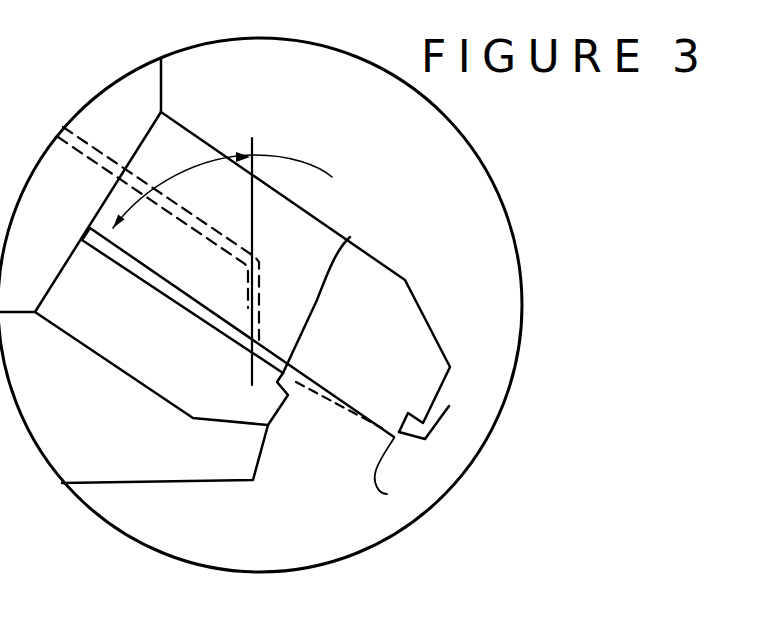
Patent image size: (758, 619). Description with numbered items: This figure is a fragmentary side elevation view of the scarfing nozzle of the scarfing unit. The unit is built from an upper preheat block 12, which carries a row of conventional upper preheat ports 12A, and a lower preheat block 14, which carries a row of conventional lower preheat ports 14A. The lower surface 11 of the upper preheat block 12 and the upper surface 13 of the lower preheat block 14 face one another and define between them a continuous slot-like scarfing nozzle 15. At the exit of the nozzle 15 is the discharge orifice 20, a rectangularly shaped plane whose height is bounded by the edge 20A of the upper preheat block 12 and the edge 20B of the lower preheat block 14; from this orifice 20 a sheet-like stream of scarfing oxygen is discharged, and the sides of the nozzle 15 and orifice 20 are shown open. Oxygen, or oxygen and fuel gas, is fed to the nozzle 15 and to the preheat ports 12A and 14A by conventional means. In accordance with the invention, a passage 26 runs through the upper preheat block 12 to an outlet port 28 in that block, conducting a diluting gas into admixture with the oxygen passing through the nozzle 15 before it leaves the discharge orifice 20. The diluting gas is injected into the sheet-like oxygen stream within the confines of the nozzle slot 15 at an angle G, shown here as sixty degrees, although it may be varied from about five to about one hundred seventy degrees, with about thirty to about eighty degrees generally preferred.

The lower surface 11 is at (152, 268).
The upper preheat block 12 is at (423, 315).
The upper preheat ports 12A is at (455, 391).
The upper surface 13 is at (240, 342).
The lower preheat block 14 is at (157, 397).
The lower preheat ports 14A is at (292, 379).
The scarfing nozzle 15 is at (190, 308).
The discharge orifice 20 is at (338, 407).
The edge of upper preheat block 20A is at (403, 471).
The edge of lower preheat block 20B is at (350, 237).
The passage 26 is at (115, 158).
The outlet port 28 is at (252, 352).
The injection angle G is at (231, 190).